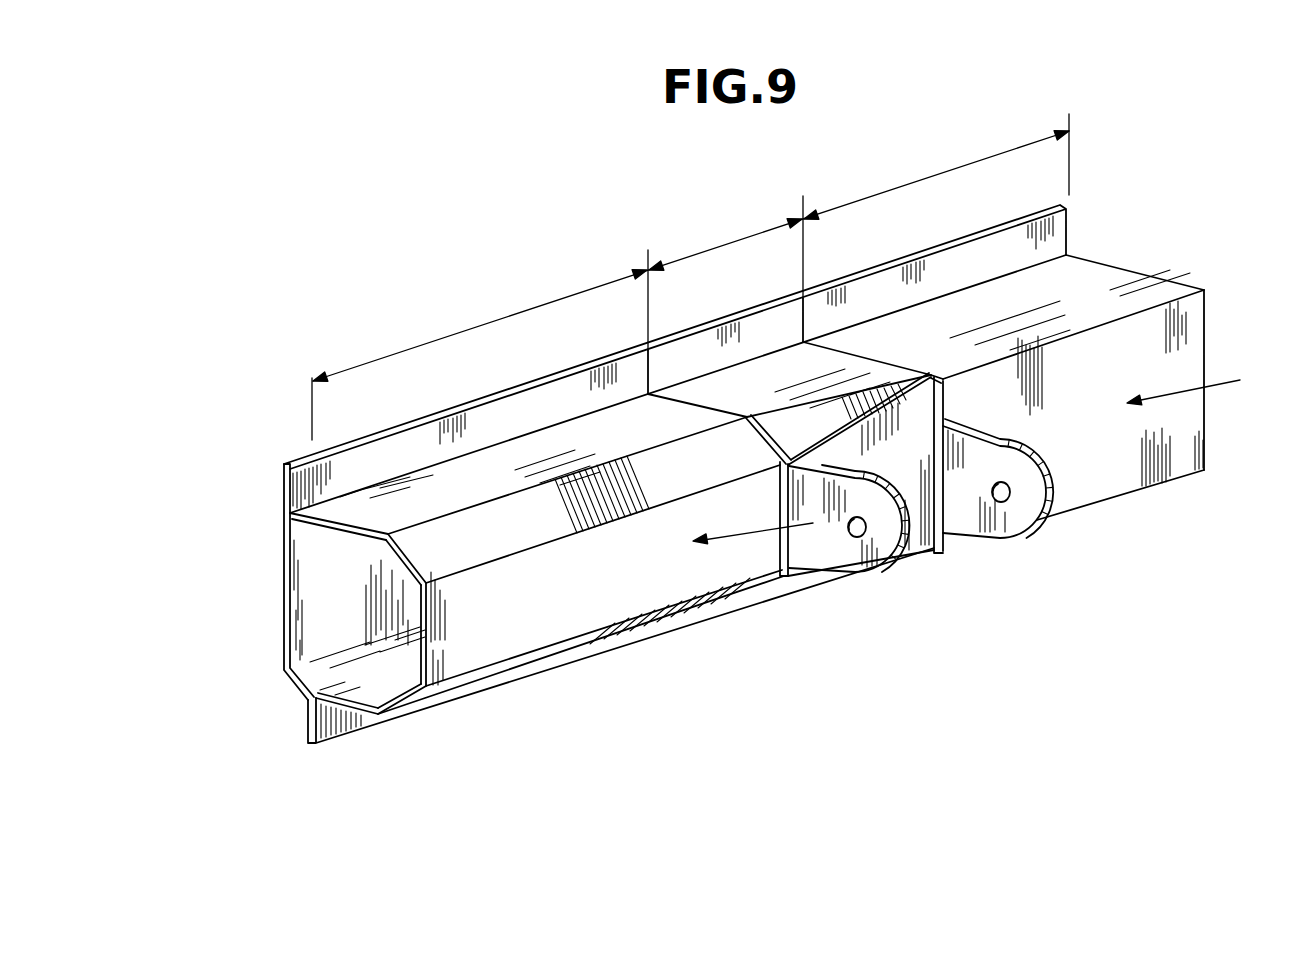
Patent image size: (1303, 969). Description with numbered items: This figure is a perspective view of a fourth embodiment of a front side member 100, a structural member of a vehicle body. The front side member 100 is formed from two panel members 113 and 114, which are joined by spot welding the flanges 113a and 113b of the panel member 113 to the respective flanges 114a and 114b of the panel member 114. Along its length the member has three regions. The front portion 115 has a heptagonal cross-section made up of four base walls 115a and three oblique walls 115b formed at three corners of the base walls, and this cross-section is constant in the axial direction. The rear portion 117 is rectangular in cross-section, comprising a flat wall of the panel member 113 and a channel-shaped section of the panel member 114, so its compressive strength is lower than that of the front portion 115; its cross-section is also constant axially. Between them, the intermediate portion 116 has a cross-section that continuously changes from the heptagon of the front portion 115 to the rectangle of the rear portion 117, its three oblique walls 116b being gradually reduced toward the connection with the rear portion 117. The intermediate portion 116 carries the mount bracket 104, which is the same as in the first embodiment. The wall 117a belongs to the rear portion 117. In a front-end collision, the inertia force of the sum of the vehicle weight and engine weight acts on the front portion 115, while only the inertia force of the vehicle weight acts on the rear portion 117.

The front side member 100 is at (656, 646).
The mount bracket 104 is at (940, 555).
The panel member 113 is at (313, 581).
The flange 113a is at (284, 488).
The flange 113b is at (313, 721).
The panel member 114 is at (458, 647).
The flange 114a is at (343, 483).
The flange 114b is at (359, 728).
The front portion 115 is at (540, 376).
The base wall 115a is at (288, 636).
The oblique wall 115b is at (524, 517).
The intermediate portion 116 is at (690, 327).
The oblique wall 116b is at (824, 418).
The rear portion 117 is at (973, 232).
The top wall of box member 117a is at (1134, 268).